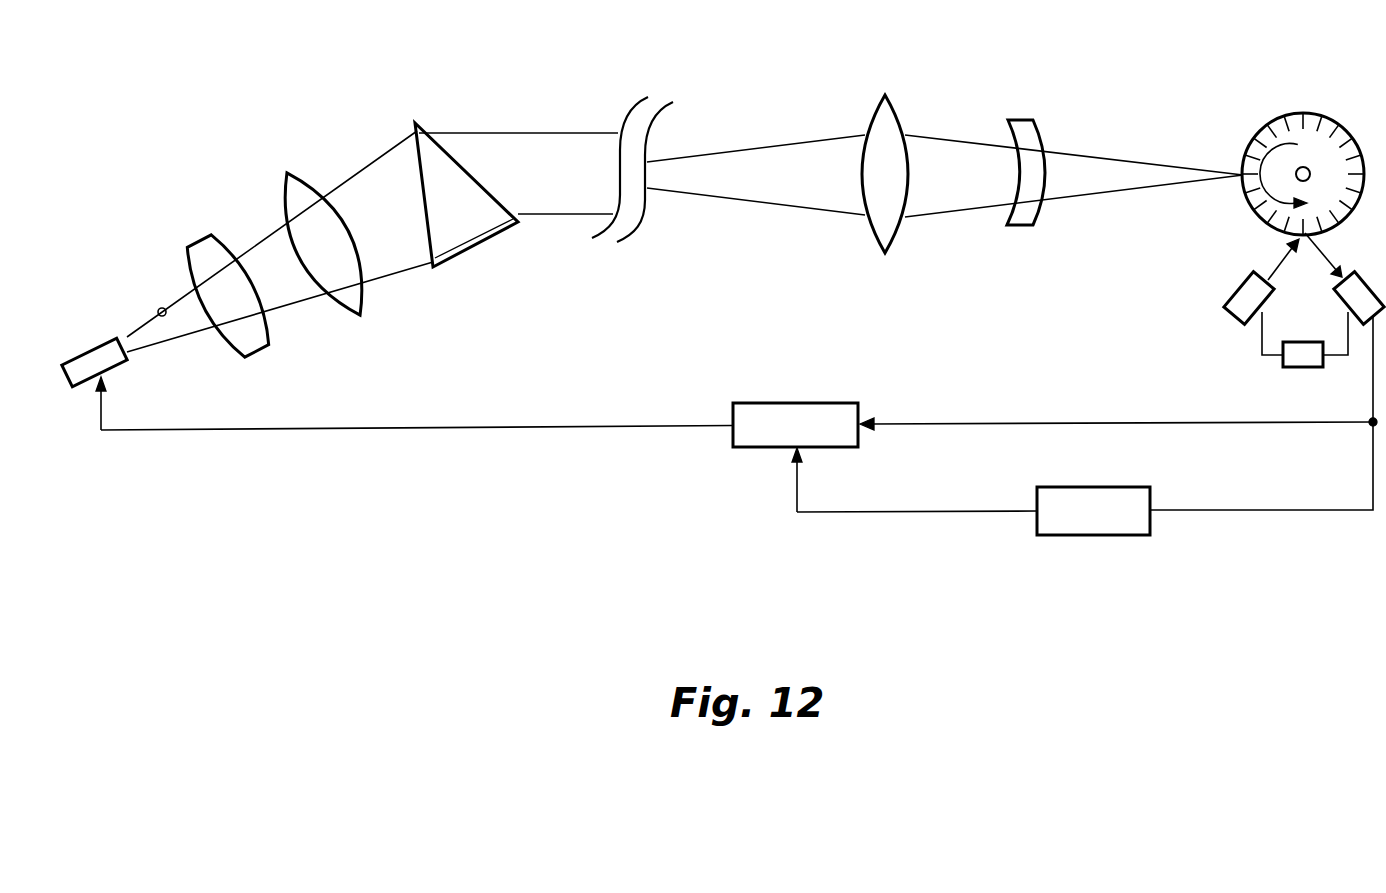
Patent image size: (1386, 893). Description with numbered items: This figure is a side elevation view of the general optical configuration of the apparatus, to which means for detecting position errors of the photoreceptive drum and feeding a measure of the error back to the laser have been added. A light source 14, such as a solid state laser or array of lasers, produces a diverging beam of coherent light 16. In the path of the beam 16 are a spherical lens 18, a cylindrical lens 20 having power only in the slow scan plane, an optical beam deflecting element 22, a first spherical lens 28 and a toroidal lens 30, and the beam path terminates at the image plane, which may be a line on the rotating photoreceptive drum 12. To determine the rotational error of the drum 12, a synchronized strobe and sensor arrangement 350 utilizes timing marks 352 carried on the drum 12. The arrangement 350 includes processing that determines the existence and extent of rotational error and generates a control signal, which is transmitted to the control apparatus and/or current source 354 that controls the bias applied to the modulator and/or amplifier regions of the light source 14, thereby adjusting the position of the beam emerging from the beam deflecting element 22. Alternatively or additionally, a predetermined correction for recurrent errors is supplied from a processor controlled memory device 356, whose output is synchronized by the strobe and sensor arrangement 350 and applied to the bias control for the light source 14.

The photoreceptive drum 12 is at (1277, 120).
The light source 14 is at (77, 353).
The beam of coherent light 16 is at (157, 309).
The spherical lens 18 is at (203, 240).
The cylindrical lens 20 is at (285, 188).
The optical beam deflecting element 22 is at (417, 123).
The first spherical lens 28 is at (883, 227).
The toroidal lens 30 is at (1023, 213).
The synchronized strobe and sensor arrangement 350 is at (1201, 262).
The timing marks 352 is at (1323, 118).
The control apparatus and/or current source 354 is at (807, 405).
The processor controlled memory device 356 is at (1103, 535).